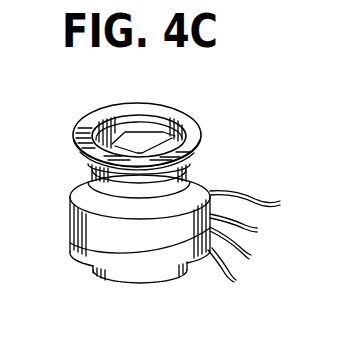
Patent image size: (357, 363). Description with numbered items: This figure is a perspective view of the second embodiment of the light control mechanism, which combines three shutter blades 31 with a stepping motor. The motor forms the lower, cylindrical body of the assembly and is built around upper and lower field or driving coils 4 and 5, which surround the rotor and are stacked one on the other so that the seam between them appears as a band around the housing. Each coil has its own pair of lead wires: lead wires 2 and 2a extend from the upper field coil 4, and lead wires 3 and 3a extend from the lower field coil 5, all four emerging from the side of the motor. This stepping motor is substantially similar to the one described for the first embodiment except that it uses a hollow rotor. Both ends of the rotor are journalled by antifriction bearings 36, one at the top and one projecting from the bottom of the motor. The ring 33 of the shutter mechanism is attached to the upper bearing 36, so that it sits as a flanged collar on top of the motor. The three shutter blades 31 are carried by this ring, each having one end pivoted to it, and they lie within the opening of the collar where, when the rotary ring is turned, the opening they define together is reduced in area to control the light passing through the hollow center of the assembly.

The lead wire 2 is at (280, 203).
The lead wire 2a is at (257, 230).
The lead wire 3 is at (250, 257).
The lead wire 3a is at (234, 282).
The field coil 4 is at (82, 215).
The field coil 5 is at (78, 240).
The shutter blade 31 is at (106, 118).
The stationary ring 33 is at (194, 163).
The antifriction bearing 36 is at (203, 180).